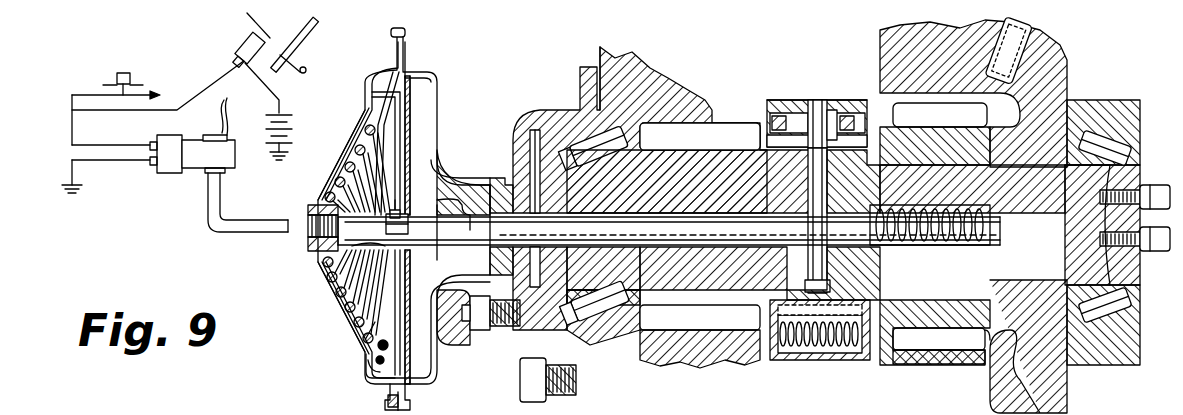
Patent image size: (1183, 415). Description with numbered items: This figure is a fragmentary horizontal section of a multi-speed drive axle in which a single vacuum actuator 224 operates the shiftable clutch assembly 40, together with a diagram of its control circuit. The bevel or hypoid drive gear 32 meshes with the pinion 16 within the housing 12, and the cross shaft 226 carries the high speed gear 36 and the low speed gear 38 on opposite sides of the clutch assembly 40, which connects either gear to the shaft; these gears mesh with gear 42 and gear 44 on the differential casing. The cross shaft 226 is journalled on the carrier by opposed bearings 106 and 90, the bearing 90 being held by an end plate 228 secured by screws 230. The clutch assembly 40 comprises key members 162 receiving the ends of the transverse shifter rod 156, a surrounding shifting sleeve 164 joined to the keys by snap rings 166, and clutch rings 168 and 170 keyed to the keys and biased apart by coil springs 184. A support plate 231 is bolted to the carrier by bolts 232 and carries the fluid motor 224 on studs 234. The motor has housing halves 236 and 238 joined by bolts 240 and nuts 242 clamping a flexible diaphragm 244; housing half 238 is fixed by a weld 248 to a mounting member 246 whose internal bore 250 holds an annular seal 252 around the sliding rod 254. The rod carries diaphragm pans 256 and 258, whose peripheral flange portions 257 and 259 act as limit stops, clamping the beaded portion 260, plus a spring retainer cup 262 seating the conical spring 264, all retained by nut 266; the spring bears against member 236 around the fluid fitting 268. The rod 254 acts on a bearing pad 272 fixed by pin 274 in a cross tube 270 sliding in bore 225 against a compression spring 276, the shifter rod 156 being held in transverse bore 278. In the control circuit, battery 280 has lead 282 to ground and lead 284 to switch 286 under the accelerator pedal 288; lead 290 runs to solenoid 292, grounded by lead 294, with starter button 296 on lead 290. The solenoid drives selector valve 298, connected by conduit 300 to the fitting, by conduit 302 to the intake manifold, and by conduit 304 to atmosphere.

The housing 12 is at (580, 75).
The pinion 16 is at (961, 88).
The bevel or hypoid drive gear 32 is at (961, 346).
The high speed gear 36 is at (946, 131).
The low speed gear 38 is at (700, 117).
The clutch assembly 40 is at (800, 343).
The gear 42 is at (930, 342).
The gear 44 is at (700, 339).
The bearing 90 is at (1084, 232).
The bearing 106 is at (584, 148).
The transverse shifter rod 156 is at (824, 225).
The key members 162 is at (806, 113).
The shifting cage or sleeve 164 is at (809, 81).
The snap rings 166 is at (813, 111).
The clutch ring 168 is at (824, 108).
The clutch ring 170 is at (806, 111).
The coil springs 184 is at (820, 343).
The vacuum actuator 224 is at (338, 234).
The bore 225 is at (690, 168).
The cross shaft 226 is at (1028, 344).
The end plate 228 is at (1025, 225).
The screws 230 is at (1083, 225).
The support plate 231 is at (640, 196).
The bolts 232 is at (544, 374).
The studs 234 is at (486, 322).
The housing half 236 is at (381, 129).
The housing half 238 is at (404, 210).
The bolts 240 is at (371, 397).
The nuts 242 is at (419, 397).
The flexible diaphragm 244 is at (422, 26).
The mounting member 246 is at (495, 207).
The weld 248 is at (453, 315).
The internal bore 250 is at (437, 223).
The annular seal 252 is at (463, 182).
The rod 254 is at (407, 201).
The diaphragm pan 256 is at (412, 317).
The peripheral flange portion 257 is at (364, 144).
The diaphragm pan 258 is at (412, 312).
The peripheral flange portion 259 is at (426, 133).
The beaded portion 260 is at (356, 364).
The spring retainer cup 262 is at (353, 353).
The conically shaped helical spring 264 is at (343, 230).
The nut 266 is at (336, 291).
The fluid fitting 268 is at (307, 230).
The cross tube 270 is at (677, 276).
The bearing pad 272 is at (546, 208).
The pin 274 is at (582, 294).
The compression spring 276 is at (930, 238).
The transverse bore 278 is at (841, 196).
The battery 280 is at (270, 134).
The lead 282 is at (295, 150).
The lead 284 is at (276, 88).
The switch 286 is at (245, 41).
The accelerator pedal 288 is at (302, 45).
The lead 290 is at (158, 102).
The solenoid 292 is at (140, 140).
The lead 294 is at (106, 176).
The starter button 296 is at (119, 74).
The selector valve 298 is at (204, 164).
The conduit 300 is at (248, 202).
The conduit 302 is at (234, 106).
The conduit 304 is at (230, 144).